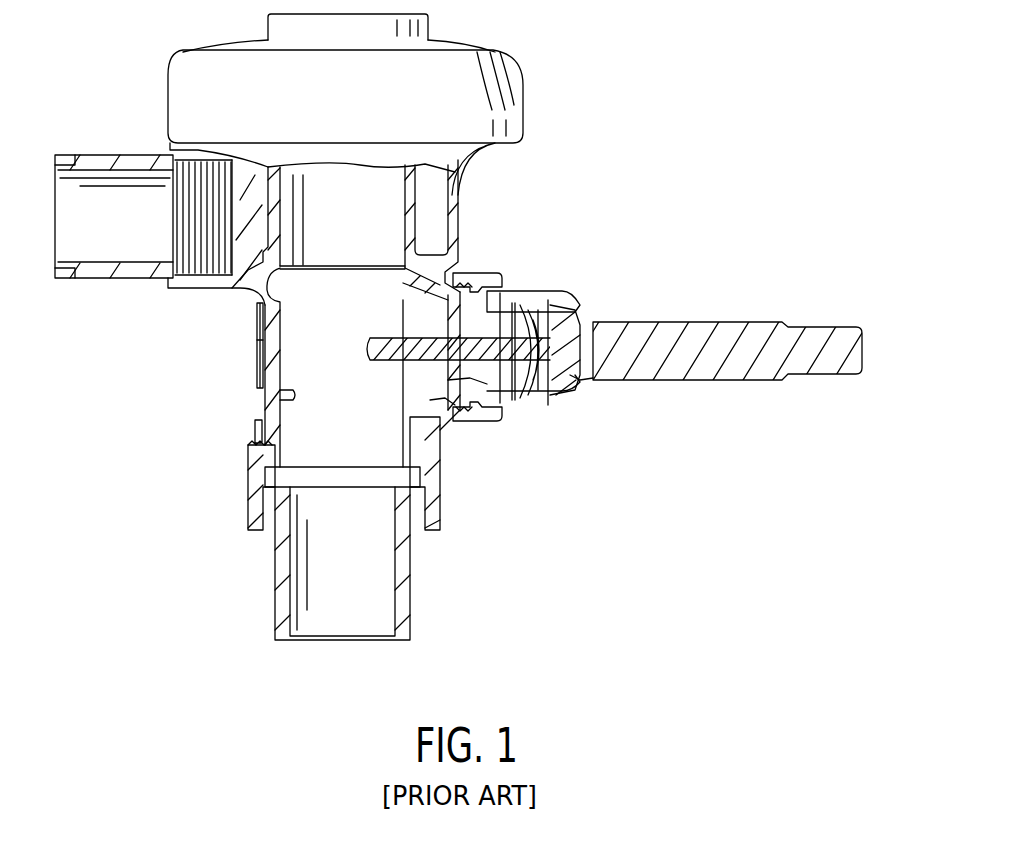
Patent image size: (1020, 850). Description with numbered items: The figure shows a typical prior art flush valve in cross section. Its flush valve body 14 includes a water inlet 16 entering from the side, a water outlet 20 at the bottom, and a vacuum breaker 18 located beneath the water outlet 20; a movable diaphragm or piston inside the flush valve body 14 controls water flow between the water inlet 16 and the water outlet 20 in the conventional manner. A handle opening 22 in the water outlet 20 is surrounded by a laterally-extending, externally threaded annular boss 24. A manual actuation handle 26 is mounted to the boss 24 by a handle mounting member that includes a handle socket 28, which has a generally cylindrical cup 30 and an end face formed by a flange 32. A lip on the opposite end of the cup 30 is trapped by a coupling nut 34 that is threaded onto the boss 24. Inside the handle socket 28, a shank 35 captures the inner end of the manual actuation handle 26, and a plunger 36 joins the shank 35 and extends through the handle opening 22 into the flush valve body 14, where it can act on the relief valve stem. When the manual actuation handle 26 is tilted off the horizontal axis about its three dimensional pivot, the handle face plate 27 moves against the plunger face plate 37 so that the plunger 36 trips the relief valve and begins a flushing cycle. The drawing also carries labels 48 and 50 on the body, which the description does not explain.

The flush valve body 14 is at (520, 82).
The water inlet 16 is at (108, 278).
The vacuum breaker 18 is at (275, 571).
The water outlet 20 is at (265, 420).
The handle opening 22 is at (443, 400).
The annular boss 24 is at (447, 387).
The manual actuation handle 26 is at (730, 342).
The handle face plate 27 is at (587, 322).
The handle socket 28 is at (527, 282).
The cylindrical cup 30 is at (553, 287).
The flange 32 is at (570, 293).
The coupling nut 34 is at (473, 415).
The shank 35 is at (573, 380).
The plunger 36 is at (398, 340).
The plunger face plate 37 is at (543, 400).
The side plate 48 is at (253, 327).
The gasket 50 is at (257, 360).